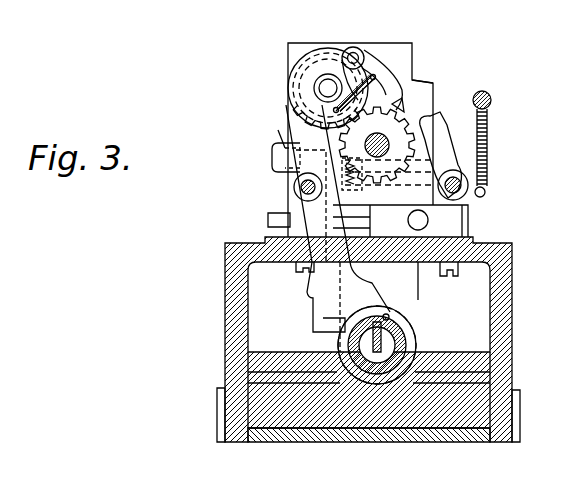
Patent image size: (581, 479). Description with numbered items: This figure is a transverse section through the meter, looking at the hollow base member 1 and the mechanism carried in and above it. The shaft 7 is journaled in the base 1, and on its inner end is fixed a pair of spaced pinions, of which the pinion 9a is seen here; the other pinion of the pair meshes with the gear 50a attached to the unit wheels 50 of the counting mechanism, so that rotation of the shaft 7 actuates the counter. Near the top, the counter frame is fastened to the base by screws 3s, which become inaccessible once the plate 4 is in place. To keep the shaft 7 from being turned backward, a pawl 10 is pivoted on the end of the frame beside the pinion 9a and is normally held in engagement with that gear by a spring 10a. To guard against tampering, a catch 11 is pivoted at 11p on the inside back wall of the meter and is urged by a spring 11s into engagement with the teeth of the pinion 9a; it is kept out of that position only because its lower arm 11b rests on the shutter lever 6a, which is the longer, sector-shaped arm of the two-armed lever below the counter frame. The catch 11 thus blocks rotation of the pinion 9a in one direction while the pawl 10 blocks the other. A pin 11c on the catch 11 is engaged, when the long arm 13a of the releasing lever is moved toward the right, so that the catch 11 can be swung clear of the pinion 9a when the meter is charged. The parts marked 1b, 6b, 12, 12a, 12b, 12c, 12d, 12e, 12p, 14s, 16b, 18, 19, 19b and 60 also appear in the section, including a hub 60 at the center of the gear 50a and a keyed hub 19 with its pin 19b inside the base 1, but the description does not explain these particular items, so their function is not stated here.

The hollow base member 1 is at (236, 329).
The housing bearing 1b is at (355, 372).
The screws 3s is at (447, 272).
The plate 4 is at (350, 436).
The longer arm of lever (shutter lever) 6a is at (452, 226).
The bracket stop 6b is at (276, 220).
The shaft 7 is at (405, 122).
The pinion (outer gear) 9a is at (402, 103).
The pawl 10 is at (372, 70).
The spring 10a is at (357, 100).
The catch 11 is at (458, 150).
The lower arm of catch 11b is at (420, 194).
The pin 11c is at (450, 150).
The pivot of catch 11p is at (466, 196).
The spring 11s is at (488, 150).
The arm 12 is at (289, 176).
The arm head 12a is at (281, 148).
The arm latch 12b is at (323, 281).
The arm finger 12c is at (343, 320).
The arm hook 12d is at (345, 326).
The arm cam edge 12e is at (340, 395).
The arm pivot 12p is at (295, 188).
The long arm of lever 13a is at (281, 142).
The spring 14s is at (371, 178).
The key 16b is at (382, 326).
The shaft 18 is at (390, 356).
The hub 19 is at (377, 357).
The hub pin 19b is at (389, 316).
The unit wheels 50 is at (290, 88).
The gear 50a is at (299, 72).
The gear hub 60 is at (327, 85).